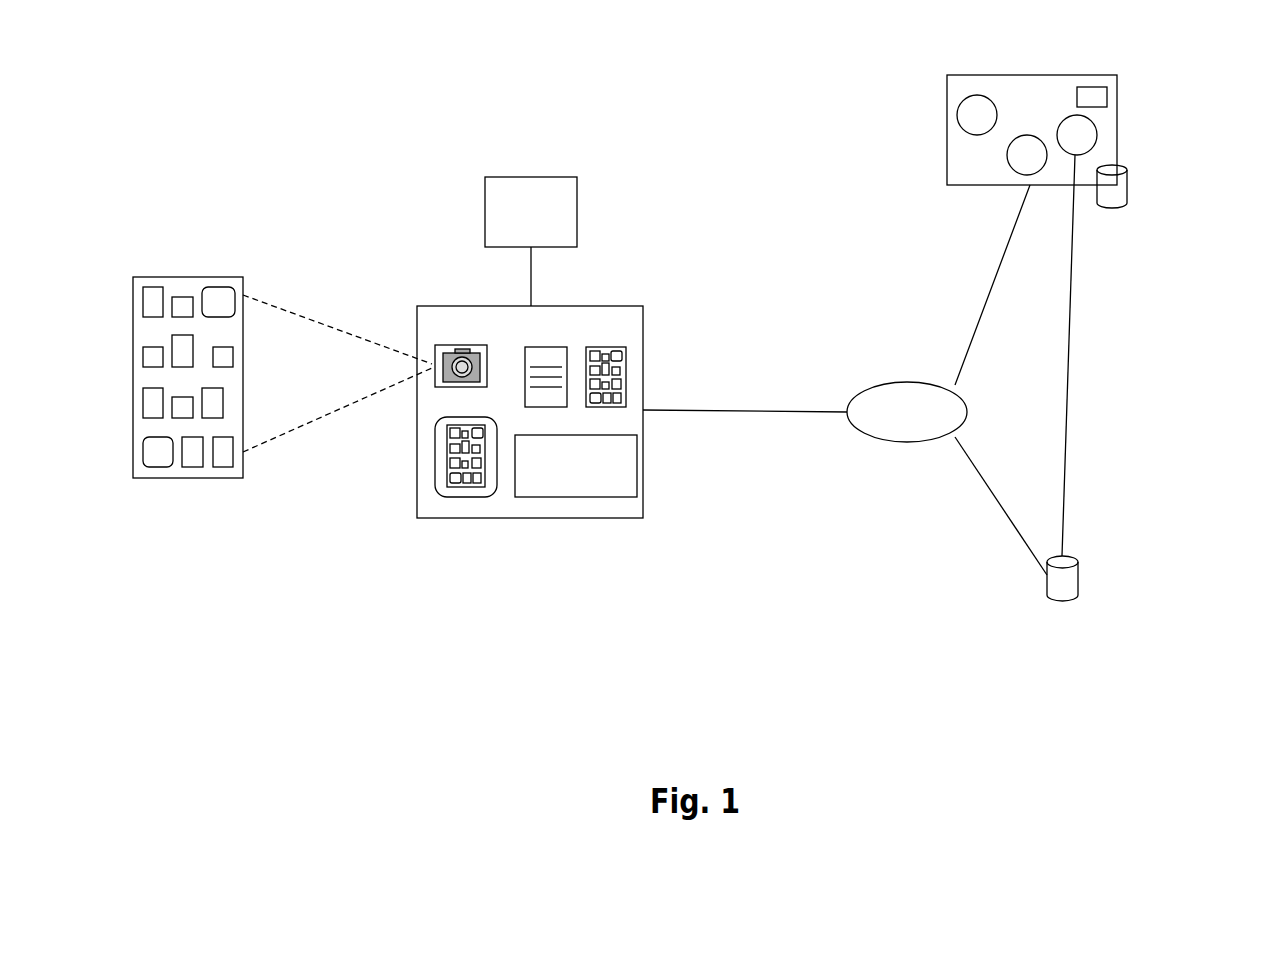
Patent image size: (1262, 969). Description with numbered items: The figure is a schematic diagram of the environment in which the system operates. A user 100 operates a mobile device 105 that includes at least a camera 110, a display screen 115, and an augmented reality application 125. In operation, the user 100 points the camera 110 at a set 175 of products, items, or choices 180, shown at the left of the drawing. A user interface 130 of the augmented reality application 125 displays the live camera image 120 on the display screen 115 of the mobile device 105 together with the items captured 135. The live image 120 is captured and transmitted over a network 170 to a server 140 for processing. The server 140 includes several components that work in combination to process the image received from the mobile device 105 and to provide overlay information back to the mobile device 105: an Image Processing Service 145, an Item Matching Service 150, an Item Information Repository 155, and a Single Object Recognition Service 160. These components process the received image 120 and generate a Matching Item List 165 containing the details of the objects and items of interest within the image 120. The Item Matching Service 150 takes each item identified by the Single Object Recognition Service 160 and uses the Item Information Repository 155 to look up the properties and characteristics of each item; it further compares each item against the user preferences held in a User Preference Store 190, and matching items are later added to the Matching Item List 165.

The user 100 is at (531, 241).
The mobile device 105 is at (445, 305).
The camera 110 is at (458, 347).
The display screen 115 is at (467, 495).
The live camera image 120 is at (625, 365).
The augmented reality application 125 is at (623, 485).
The user interface 130 is at (567, 375).
The items captured 135 is at (478, 438).
The server 140 is at (1015, 65).
The Image Processing Service 145 is at (957, 113).
The Item Matching Service 150 is at (1095, 136).
The Item Information Repository 155 is at (1118, 196).
The Single Object Recognition Service 160 is at (1005, 155).
The Matching Item List 165 is at (1110, 93).
The network 170 is at (845, 380).
The set of products, items, or choices 175 is at (188, 478).
The products, items, or choices 180 is at (152, 287).
The User Preference Store 190 is at (1067, 598).